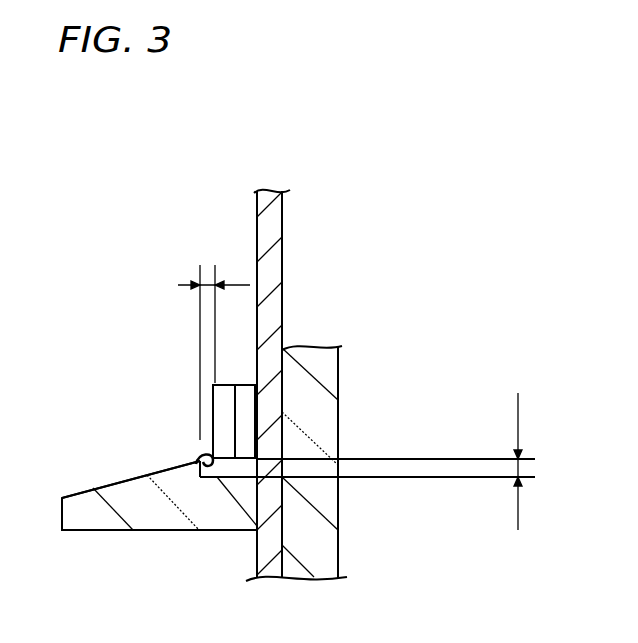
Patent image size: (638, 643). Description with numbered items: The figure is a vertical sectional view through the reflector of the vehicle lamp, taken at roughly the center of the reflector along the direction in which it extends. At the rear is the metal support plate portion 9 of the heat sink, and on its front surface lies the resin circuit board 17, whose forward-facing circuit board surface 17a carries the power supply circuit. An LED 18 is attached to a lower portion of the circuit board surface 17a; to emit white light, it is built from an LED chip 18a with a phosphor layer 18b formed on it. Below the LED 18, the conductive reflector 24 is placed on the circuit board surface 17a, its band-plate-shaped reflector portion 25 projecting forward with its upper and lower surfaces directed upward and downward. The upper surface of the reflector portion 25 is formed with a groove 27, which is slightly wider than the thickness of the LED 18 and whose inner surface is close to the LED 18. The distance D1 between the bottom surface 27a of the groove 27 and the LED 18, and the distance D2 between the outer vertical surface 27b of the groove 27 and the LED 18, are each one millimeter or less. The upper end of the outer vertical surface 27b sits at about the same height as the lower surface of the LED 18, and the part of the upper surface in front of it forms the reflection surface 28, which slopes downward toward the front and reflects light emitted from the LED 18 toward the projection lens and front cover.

The support plate portion 9 is at (318, 500).
The circuit board 17 is at (270, 537).
The circuit board surface 17a is at (257, 215).
The light emitting diode 18 is at (302, 325).
The LED chip 18a is at (243, 392).
The phosphor layer 18b is at (223, 392).
The conductive reflector 24 is at (105, 506).
The reflector portion 25 is at (131, 495).
The groove 27 is at (190, 501).
The bottom surface of the groove 27a is at (238, 476).
The outer vertical surface of the groove 27b is at (201, 458).
The reflection surface 28 is at (93, 490).
The distance between bottom surface of groove and LEDs D1 is at (518, 468).
The distance between outer vertical surface of groove and LEDs D2 is at (207, 270).